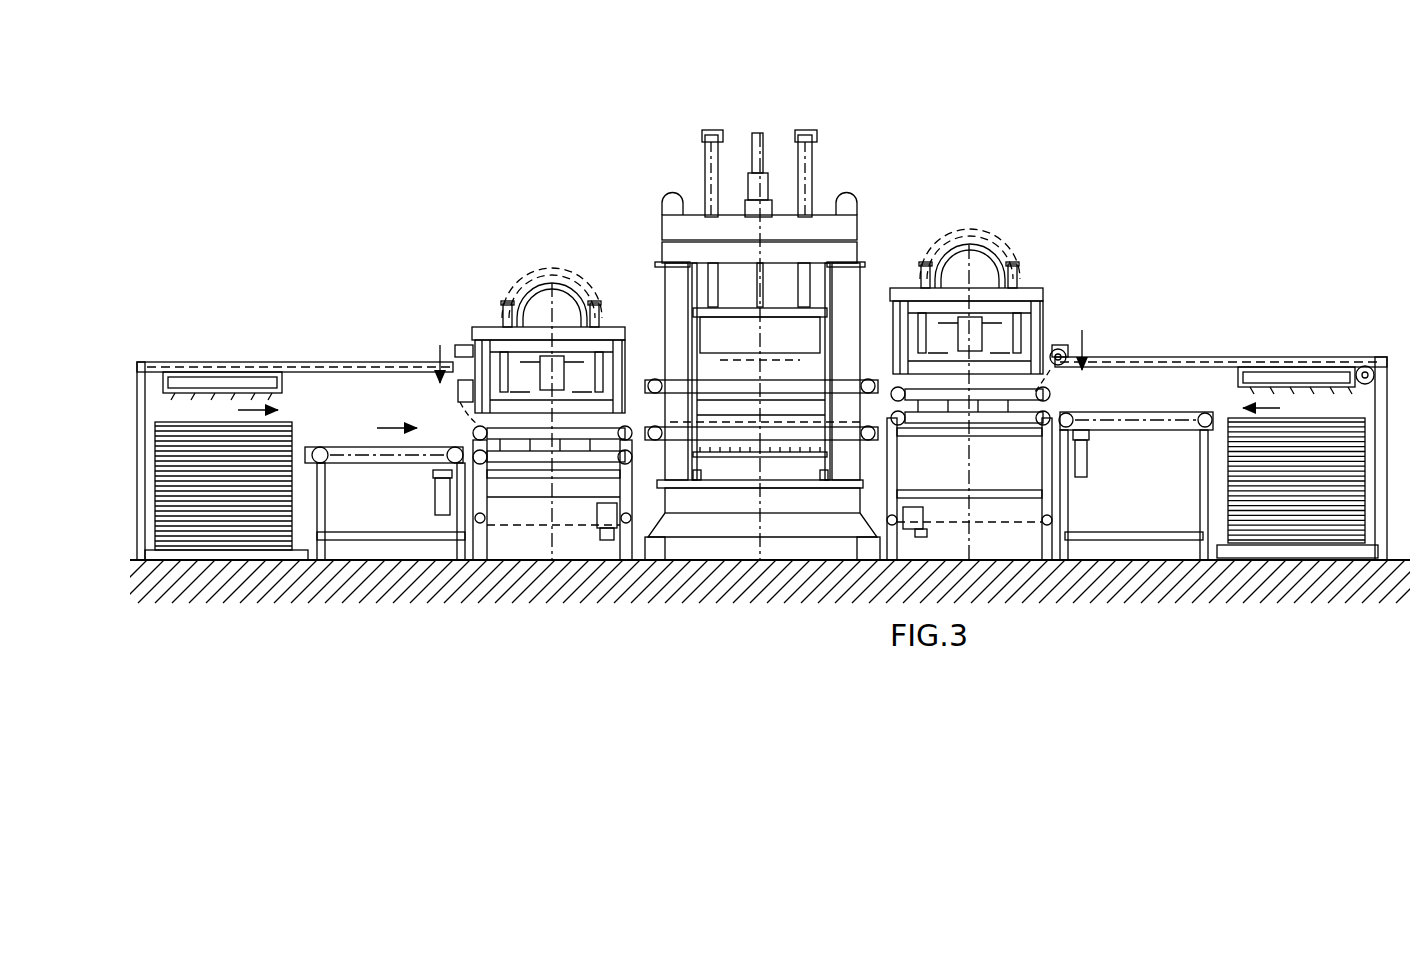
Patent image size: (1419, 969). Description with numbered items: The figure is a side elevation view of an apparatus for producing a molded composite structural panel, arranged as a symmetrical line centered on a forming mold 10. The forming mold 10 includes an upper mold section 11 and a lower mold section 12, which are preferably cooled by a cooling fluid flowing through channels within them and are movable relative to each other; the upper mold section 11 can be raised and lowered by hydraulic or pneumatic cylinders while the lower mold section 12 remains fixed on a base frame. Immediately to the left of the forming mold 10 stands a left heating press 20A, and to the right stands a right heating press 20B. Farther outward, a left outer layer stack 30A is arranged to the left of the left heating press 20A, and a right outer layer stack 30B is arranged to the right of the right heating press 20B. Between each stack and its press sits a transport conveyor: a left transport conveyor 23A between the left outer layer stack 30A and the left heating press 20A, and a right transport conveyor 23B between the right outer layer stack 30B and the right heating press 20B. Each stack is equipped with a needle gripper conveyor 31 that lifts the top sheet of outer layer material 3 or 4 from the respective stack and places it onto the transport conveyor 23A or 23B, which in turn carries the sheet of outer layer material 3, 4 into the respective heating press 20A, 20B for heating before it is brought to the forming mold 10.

The forming mold 10 is at (790, 110).
The upper mold section 11 is at (722, 362).
The lower mold section 12 is at (730, 467).
The left heating press 20A is at (548, 245).
The right heating press 20B is at (979, 212).
The left transport conveyor 23A is at (380, 413).
The right transport conveyor 23B is at (1132, 397).
The left outer layer stack 30A is at (218, 330).
The right outer layer stack 30B is at (1305, 330).
The needle gripper conveyor 31 is at (163, 393).
The outer layer material 3 is at (177, 453).
The outer layer material 4 is at (1352, 445).